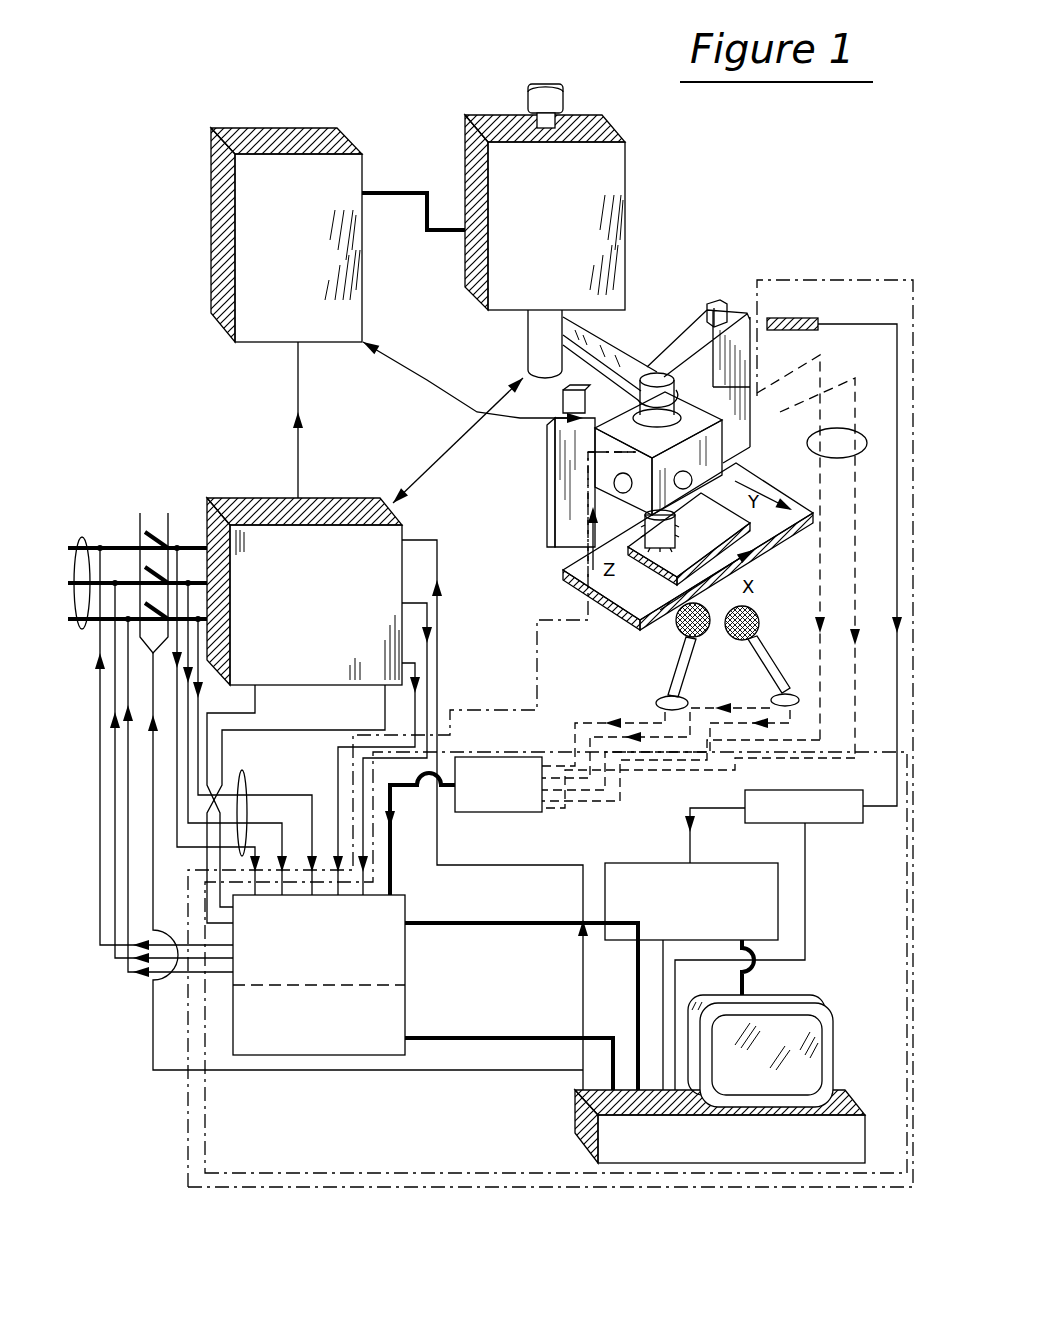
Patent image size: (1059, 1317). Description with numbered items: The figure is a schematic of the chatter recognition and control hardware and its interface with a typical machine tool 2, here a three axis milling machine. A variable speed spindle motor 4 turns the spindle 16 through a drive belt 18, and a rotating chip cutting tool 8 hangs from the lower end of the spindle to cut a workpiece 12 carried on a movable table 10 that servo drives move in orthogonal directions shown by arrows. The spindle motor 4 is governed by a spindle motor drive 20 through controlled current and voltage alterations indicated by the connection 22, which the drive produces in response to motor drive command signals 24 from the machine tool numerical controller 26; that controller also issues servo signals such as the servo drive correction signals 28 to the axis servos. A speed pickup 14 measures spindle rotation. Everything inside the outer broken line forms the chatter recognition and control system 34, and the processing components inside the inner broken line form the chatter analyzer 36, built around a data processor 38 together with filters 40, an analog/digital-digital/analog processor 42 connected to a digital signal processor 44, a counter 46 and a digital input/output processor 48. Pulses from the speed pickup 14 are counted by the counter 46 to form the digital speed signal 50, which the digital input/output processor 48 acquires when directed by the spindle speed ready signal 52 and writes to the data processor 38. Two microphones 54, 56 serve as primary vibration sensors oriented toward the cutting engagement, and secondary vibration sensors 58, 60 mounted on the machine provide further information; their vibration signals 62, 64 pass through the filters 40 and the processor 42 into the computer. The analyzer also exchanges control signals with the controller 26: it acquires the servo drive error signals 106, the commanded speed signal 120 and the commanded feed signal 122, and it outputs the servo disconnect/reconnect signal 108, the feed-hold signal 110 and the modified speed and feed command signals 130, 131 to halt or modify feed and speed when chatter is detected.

The machine tool 2 is at (477, 412).
The spindle motor 4 is at (500, 310).
The cutting tool 8 is at (678, 533).
The table 10 is at (563, 570).
The workpiece 12 is at (667, 577).
The speed pickup 14 is at (797, 318).
The spindle 16 is at (673, 375).
The drive belt 18 is at (598, 340).
The spindle motor drive 20 is at (240, 210).
The connection 22 is at (426, 222).
The motor drive command signals 24 is at (307, 418).
The machine tool numerical controller 26 is at (280, 498).
The servo drive correction signal 28 is at (84, 537).
The chatter recognition and control system 34 is at (188, 1142).
The chatter analyzer 36 is at (468, 1172).
The data processor 38 is at (840, 1090).
The filtering circuits 40 is at (517, 757).
The analog/digital-digital/analog processor 42 is at (237, 977).
The digital signal processor 44 is at (233, 1023).
The counter 46 is at (853, 825).
The digital input/output processor 48 is at (707, 862).
The digital speed signal 50 is at (688, 832).
The spindle speed ready signal 52 is at (807, 927).
The microphone 54 is at (763, 660).
The microphone 56 is at (680, 655).
The secondary vibration sensor 58 is at (618, 478).
The secondary vibration sensor 60 is at (690, 482).
The vibration signal 62 is at (657, 703).
The vibration signal 64 is at (840, 428).
The servo drive error signals 106 is at (243, 772).
The servo disconnect/reconnect signal 108 is at (243, 1072).
The feed-hold signal 110 is at (438, 553).
The commanded numerical controller speed signal 120 is at (428, 615).
The commanded numerical control feed signal 122 is at (416, 702).
The modified speed command signal 130 is at (257, 700).
The modified feed command signal 131 is at (320, 729).